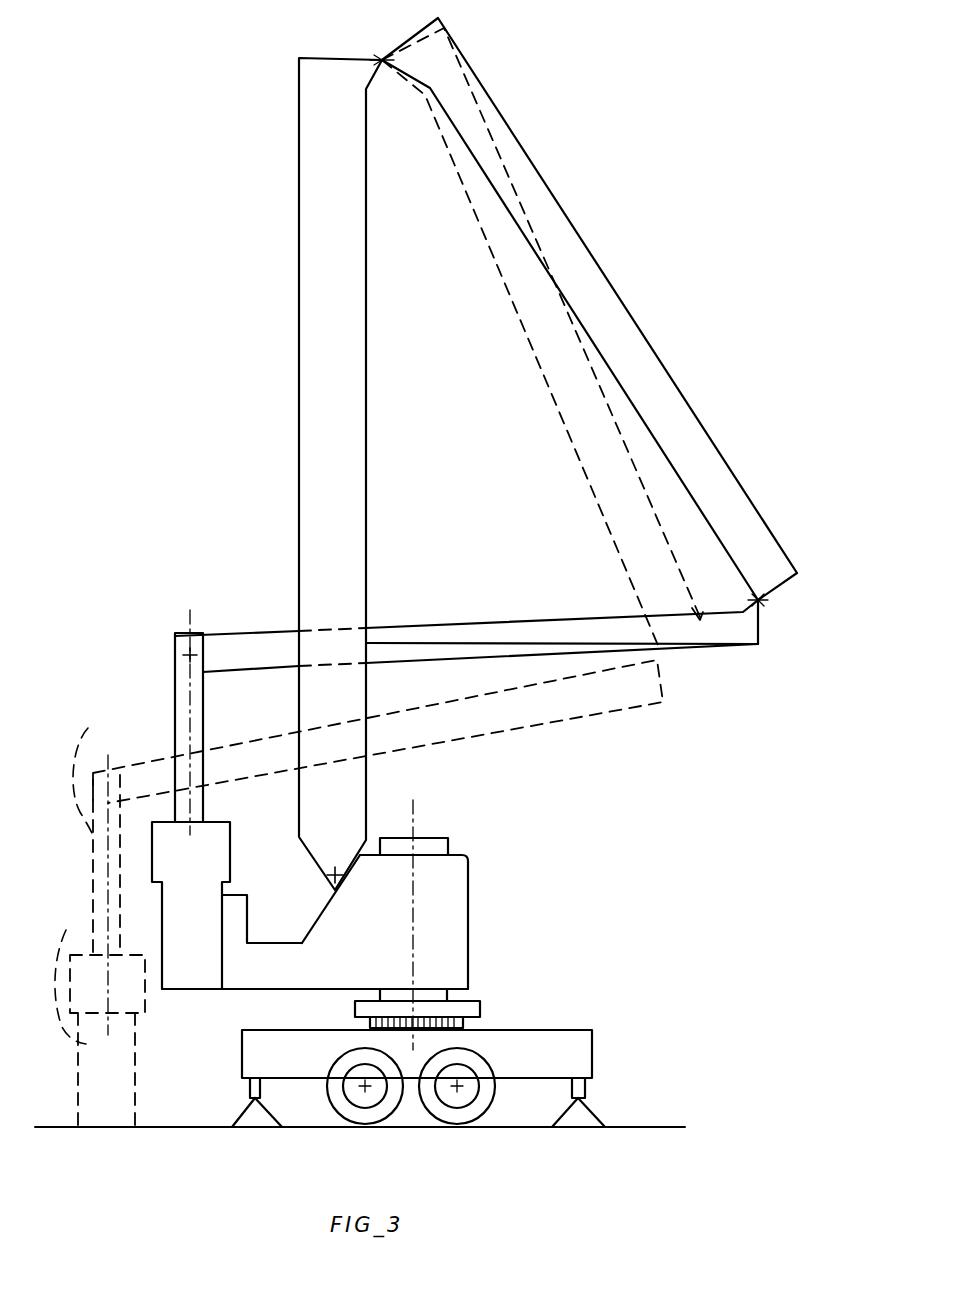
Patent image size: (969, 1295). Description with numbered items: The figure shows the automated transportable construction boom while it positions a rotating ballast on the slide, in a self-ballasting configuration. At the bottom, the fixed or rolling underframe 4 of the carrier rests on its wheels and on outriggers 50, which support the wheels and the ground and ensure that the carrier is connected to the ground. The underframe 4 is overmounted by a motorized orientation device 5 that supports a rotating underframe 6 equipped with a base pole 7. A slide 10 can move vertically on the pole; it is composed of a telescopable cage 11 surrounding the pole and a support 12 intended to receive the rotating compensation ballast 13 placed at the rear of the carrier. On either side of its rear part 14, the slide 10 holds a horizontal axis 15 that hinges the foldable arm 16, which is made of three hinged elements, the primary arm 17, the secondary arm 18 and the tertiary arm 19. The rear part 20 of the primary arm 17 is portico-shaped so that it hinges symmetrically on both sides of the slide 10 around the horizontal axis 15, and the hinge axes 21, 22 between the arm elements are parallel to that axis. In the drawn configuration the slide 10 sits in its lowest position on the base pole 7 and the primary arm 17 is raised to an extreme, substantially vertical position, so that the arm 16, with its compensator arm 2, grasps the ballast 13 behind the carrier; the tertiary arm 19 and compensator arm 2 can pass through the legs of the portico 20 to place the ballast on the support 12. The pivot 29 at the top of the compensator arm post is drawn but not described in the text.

The compensator arm 2 is at (178, 708).
The underframe 4 is at (558, 1052).
The motorized orientation device 5 is at (462, 1024).
The rotating underframe 6 is at (462, 1008).
The base pole 7 is at (437, 843).
The slide 10 is at (416, 926).
The telescopable cage 11 is at (447, 888).
The support 12 is at (236, 927).
The rotating compensation ballast 13 is at (182, 910).
The rear part 14 is at (335, 902).
The horizontal axis 15 is at (330, 873).
The arm 16 is at (663, 305).
The primary arm 17 is at (325, 312).
The secondary arm 18 is at (548, 226).
The tertiary arm 19 is at (263, 650).
The rear part of primary arm 20 is at (320, 698).
The hinge axis 21 is at (382, 56).
The hinge axis 22 is at (763, 602).
The pivot 29 is at (177, 664).
The outriggers 50 is at (598, 1122).